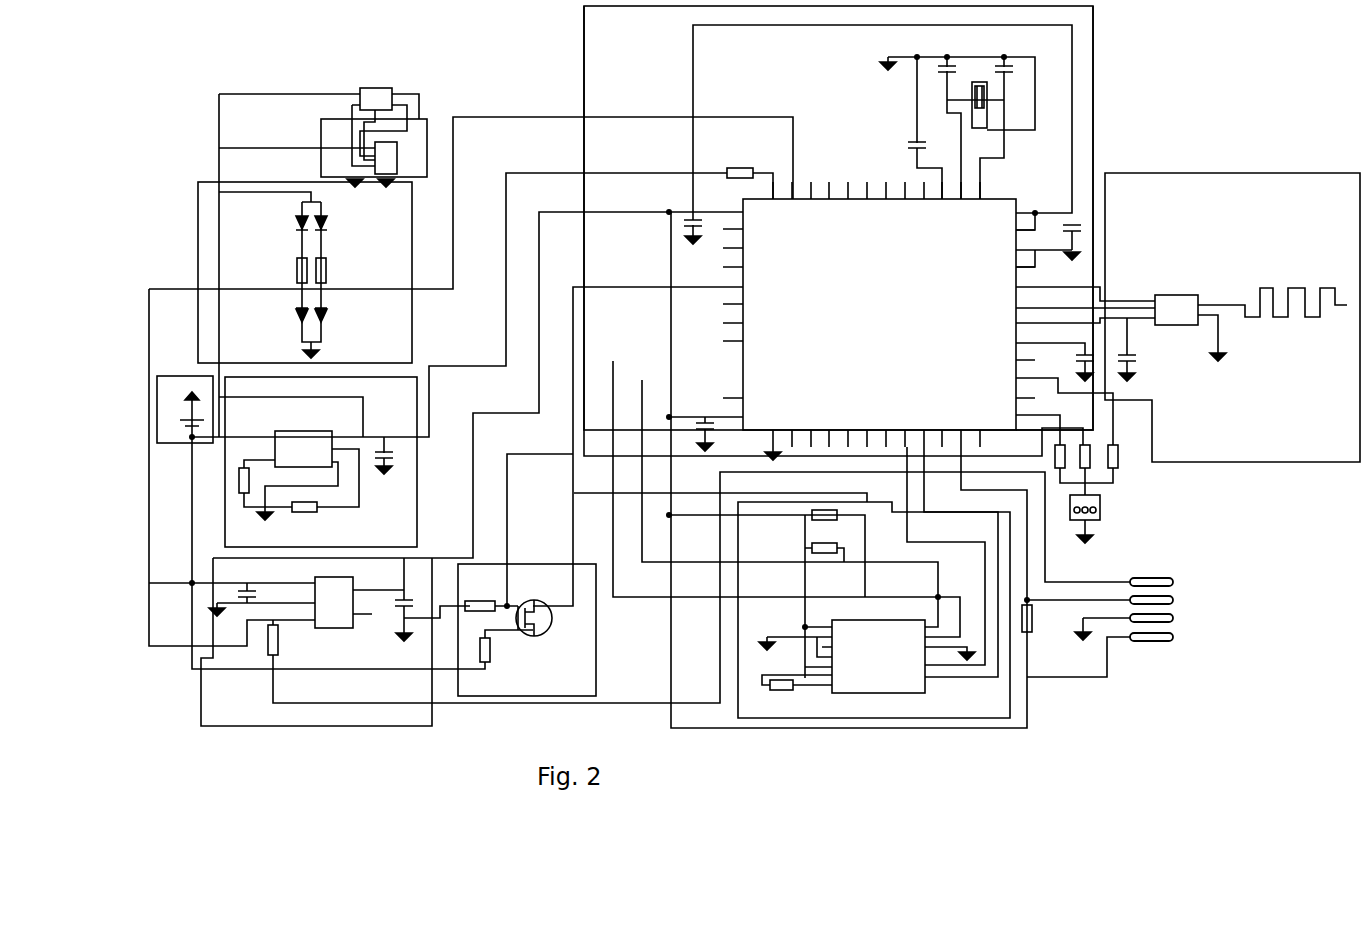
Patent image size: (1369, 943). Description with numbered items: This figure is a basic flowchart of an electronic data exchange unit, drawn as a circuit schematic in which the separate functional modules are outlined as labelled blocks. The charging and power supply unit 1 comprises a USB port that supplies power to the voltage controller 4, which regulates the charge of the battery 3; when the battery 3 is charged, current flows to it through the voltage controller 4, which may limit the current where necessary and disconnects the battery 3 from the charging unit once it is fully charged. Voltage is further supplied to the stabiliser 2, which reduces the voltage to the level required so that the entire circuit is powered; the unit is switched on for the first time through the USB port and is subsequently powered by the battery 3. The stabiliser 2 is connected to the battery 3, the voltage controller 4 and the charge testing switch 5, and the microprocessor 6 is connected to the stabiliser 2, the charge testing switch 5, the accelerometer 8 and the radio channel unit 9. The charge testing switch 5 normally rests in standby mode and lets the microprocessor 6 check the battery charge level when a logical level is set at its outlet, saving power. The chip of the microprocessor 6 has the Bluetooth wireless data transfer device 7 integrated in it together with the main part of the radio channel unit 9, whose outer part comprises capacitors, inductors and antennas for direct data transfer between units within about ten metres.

The charging and power supply unit 1 is at (318, 110).
The stabiliser 2 is at (284, 454).
The battery 3 is at (135, 409).
The voltage controller 4 is at (321, 462).
The charge testing switch 5 is at (527, 630).
The microprocessor 6 is at (838, 218).
The Bluetooth wireless data transfer device 7 is at (870, 280).
The accelerometer 8 is at (874, 611).
The radio channel unit 9 is at (1232, 317).